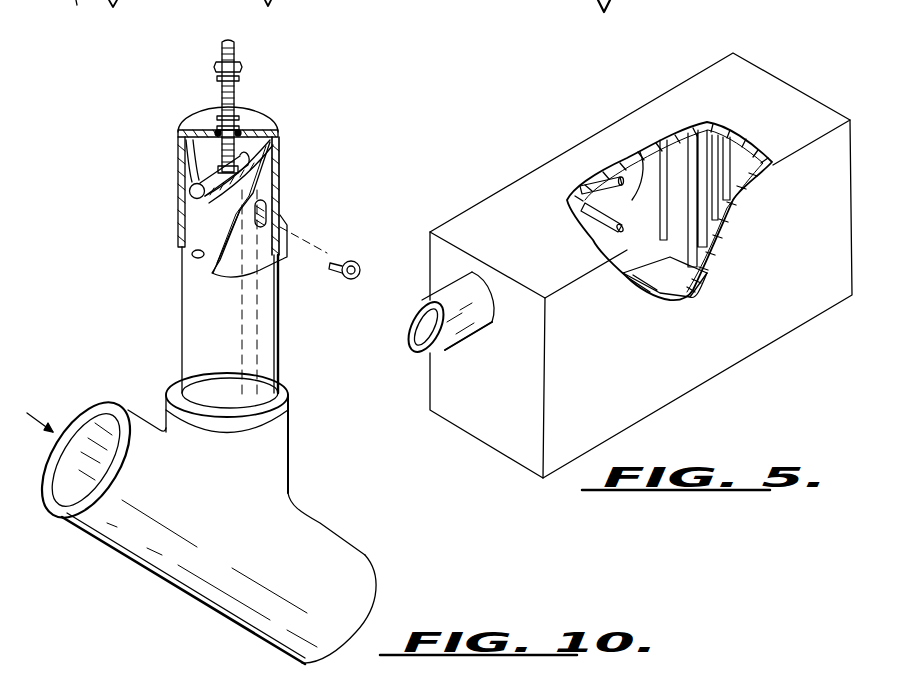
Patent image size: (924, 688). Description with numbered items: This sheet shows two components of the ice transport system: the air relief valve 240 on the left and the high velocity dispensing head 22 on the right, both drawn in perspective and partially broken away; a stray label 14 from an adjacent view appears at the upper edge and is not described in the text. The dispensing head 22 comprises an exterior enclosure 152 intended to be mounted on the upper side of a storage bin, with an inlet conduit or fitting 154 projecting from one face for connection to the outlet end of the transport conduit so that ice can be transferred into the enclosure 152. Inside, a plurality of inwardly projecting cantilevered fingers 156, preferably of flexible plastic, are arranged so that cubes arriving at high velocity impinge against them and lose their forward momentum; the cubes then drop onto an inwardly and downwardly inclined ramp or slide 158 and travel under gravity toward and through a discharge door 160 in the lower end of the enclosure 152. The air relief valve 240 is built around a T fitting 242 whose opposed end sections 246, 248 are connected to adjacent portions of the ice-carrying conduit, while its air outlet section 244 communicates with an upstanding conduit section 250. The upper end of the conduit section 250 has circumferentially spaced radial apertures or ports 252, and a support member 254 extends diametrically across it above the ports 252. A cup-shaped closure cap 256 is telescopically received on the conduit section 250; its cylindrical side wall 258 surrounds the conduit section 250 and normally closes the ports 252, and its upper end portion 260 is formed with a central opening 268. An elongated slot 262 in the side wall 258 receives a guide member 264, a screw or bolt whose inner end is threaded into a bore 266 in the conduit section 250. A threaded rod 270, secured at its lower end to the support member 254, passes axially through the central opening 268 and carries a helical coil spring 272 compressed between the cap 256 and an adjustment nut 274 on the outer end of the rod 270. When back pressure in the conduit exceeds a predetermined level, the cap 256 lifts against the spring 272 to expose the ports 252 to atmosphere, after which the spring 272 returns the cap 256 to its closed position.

In FIG. 10, the wheelchair frame 14 is at (67, 29).
In FIG. 5, the high velocity dispensing head 22 is at (640, 93).
In FIG. 5, the exterior enclosure 152 is at (517, 177).
In FIG. 5, the inlet conduit or fitting 154 is at (466, 337).
In FIG. 5, the cantilevered fingers 156 is at (652, 148).
In FIG. 5, the inclined ramp or slide 158 is at (655, 290).
In FIG. 5, the discharge door 160 is at (697, 293).
In FIG. 10, the air relief valve 240 is at (364, 198).
In FIG. 10, the T fitting 242 is at (323, 523).
In FIG. 10, the air outlet section 244 is at (282, 447).
In FIG. 10, the end section 246 is at (350, 590).
In FIG. 10, the end section 248 is at (135, 423).
In FIG. 10, the conduit section 250 is at (247, 338).
In FIG. 10, the apertures or ports 252 is at (192, 255).
In FIG. 10, the support member 254 is at (205, 200).
In FIG. 10, the cup-shaped closure cap 256 is at (281, 122).
In FIG. 10, the cylindrical side wall 258 is at (272, 205).
In FIG. 10, the end portion 260 is at (197, 136).
In FIG. 10, the elongated slot 262 is at (246, 243).
In FIG. 10, the guide member 264 is at (357, 260).
In FIG. 10, the bore 266 is at (268, 220).
In FIG. 10, the central opening 268 is at (243, 133).
In FIG. 10, the threaded rod 270 is at (238, 88).
In FIG. 10, the helical coil spring 272 is at (220, 80).
In FIG. 10, the adjustment nut 274 is at (222, 72).